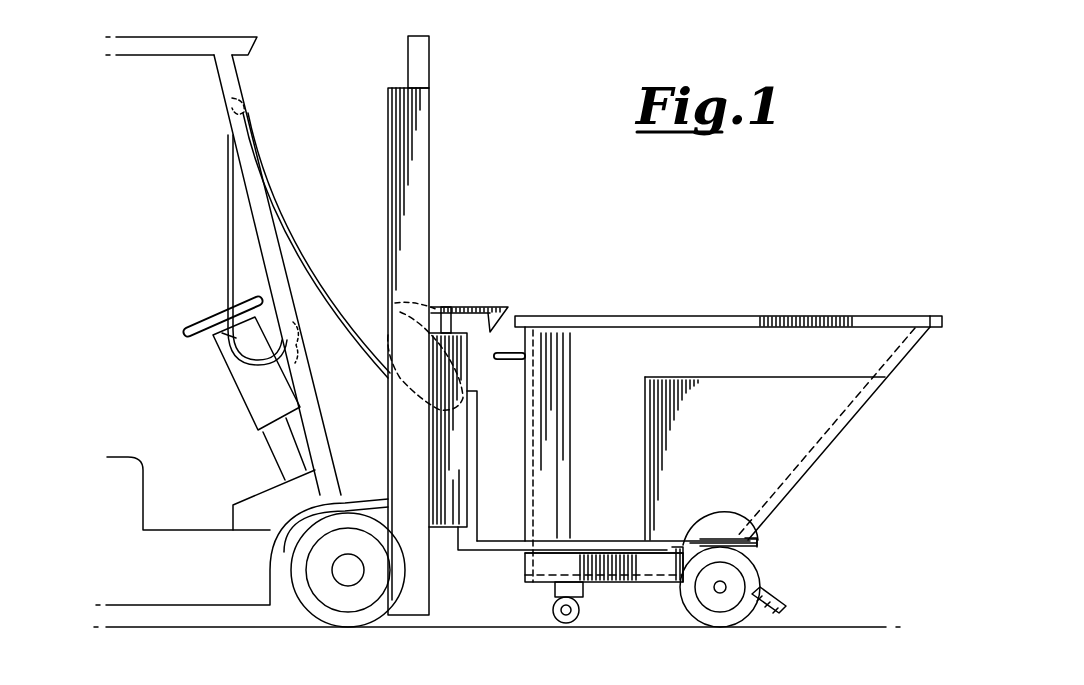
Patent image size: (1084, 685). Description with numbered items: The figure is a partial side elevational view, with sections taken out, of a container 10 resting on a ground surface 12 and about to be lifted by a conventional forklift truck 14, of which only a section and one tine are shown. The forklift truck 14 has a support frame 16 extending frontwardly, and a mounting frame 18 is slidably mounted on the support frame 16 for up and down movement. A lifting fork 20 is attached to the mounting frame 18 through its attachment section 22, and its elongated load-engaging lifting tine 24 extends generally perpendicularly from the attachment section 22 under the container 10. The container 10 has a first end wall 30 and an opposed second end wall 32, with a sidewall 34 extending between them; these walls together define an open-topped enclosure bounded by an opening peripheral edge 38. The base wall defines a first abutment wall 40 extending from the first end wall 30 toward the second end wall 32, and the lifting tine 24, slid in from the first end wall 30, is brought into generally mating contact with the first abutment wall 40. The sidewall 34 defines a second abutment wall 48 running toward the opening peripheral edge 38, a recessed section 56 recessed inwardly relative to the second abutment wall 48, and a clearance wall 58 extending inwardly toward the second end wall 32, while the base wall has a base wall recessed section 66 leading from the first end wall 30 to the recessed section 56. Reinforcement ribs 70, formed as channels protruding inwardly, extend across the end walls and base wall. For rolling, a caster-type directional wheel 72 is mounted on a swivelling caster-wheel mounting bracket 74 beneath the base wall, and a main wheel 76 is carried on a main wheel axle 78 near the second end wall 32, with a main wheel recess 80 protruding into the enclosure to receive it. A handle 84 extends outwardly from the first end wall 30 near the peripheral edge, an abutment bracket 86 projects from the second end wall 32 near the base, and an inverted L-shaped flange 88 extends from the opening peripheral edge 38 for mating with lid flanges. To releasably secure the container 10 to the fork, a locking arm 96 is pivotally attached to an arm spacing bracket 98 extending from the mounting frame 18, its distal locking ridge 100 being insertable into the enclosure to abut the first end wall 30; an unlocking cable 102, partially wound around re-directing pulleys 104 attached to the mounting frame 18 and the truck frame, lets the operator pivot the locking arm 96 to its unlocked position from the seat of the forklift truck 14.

The container 10 is at (714, 410).
The ground surface 12 is at (856, 625).
The forklift truck 14 is at (302, 104).
The support frame 16 is at (470, 148).
The mounting frame 18 is at (465, 374).
The lifting fork 20 is at (486, 568).
The attachment section 22 is at (477, 440).
The lifting tine 24 is at (720, 514).
The first end wall 30 is at (527, 500).
The second end wall 32 is at (902, 358).
The sidewall 34 is at (668, 348).
The opening peripheral edge 38 is at (833, 316).
The first abutment wall 40 is at (628, 548).
The second abutment wall 48 is at (655, 468).
The recessed section 56 is at (815, 418).
The clearance wall 58 is at (836, 386).
The base wall recessed section 66 is at (540, 575).
The reinforcement rib 70 is at (832, 448).
The directional wheel 72 is at (548, 568).
The caster-wheel mounting bracket 74 is at (574, 602).
The main wheel 76 is at (761, 583).
The main wheel axle 78 is at (706, 598).
The main wheel recess 80 is at (759, 545).
The handle 84 is at (520, 352).
The abutment bracket 86 is at (788, 608).
The inverted L-shaped flange 88 is at (904, 320).
The locking arm 96 is at (450, 312).
The arm spacing bracket 98 is at (440, 320).
The locking ridge 100 is at (498, 309).
The unlocking cable 102 is at (290, 200).
The re-directing pulley 104 is at (233, 105).